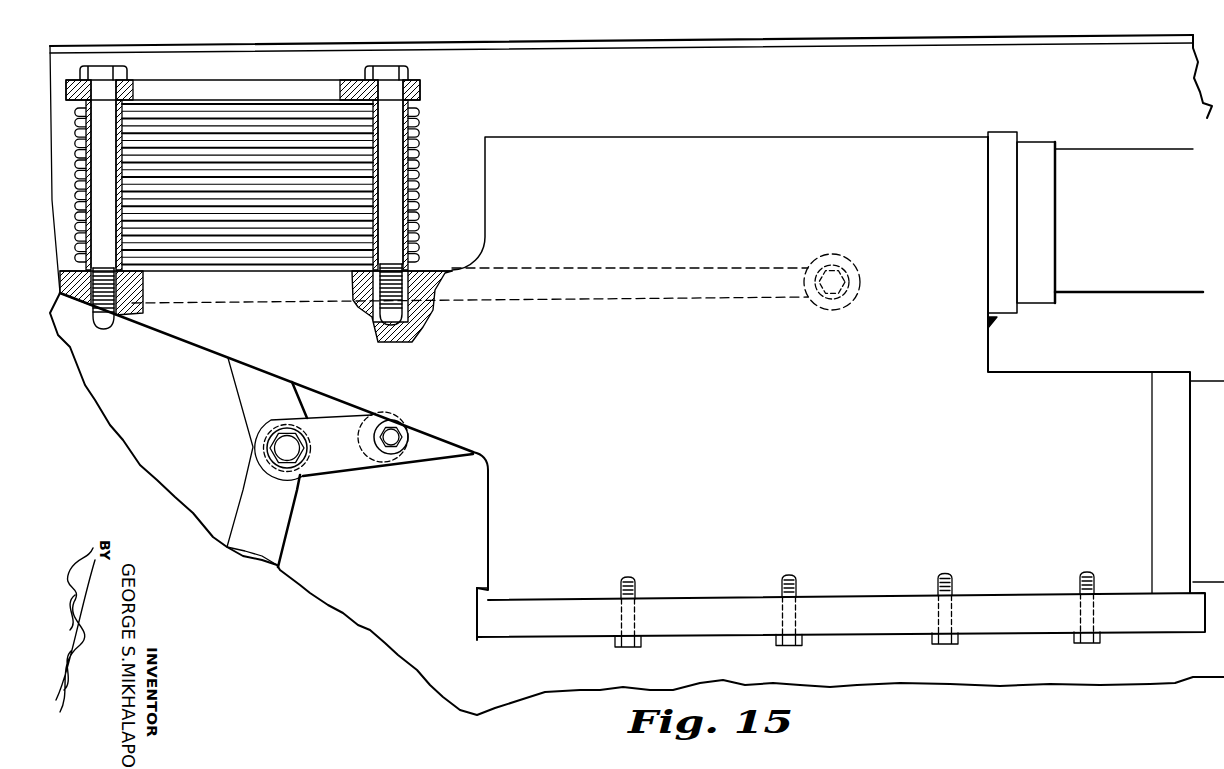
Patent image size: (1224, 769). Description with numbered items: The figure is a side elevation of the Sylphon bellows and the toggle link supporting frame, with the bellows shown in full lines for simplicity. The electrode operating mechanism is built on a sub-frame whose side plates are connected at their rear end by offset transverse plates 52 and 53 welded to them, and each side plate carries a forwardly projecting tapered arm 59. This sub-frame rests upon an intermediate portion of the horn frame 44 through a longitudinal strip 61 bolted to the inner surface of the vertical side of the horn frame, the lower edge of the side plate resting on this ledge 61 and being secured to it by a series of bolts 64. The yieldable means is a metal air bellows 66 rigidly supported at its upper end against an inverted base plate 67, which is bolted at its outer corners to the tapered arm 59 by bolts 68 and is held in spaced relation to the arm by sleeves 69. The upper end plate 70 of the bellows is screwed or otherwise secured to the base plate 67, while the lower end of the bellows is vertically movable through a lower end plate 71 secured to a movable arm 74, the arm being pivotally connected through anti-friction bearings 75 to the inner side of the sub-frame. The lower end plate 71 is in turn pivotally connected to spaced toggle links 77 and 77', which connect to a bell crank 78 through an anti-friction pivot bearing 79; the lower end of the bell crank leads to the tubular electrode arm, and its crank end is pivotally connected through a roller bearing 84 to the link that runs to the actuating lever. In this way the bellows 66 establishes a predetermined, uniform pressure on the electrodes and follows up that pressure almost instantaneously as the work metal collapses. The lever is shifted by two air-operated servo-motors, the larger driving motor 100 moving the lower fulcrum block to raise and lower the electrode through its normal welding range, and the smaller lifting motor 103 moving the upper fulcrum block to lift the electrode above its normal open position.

The horn frame 44 is at (553, 41).
The offset transverse plate 52 is at (1000, 135).
The lifting servo-motor 103 is at (1122, 165).
The offset transverse plate 53 is at (1168, 383).
The servo-motor 100 is at (1212, 397).
The longitudinal strip 61 is at (885, 634).
The bolts 64 is at (625, 648).
The inverted base plate 67 is at (252, 87).
The bolts 68 is at (112, 73).
The metal air bellows 66 is at (413, 165).
The sleeves 69 is at (84, 118).
The upper end plate 70 is at (200, 103).
The lower end plate 71 is at (255, 264).
The movable arm 74 is at (498, 290).
The anti-friction bearings 75 is at (838, 292).
The tapered arm 59 is at (180, 325).
The toggle link 77 is at (247, 461).
The plate 77' is at (298, 474).
The bell crank 78 is at (348, 450).
The anti-friction pivot bearing 79 is at (270, 436).
The roller bearing 84 is at (392, 458).